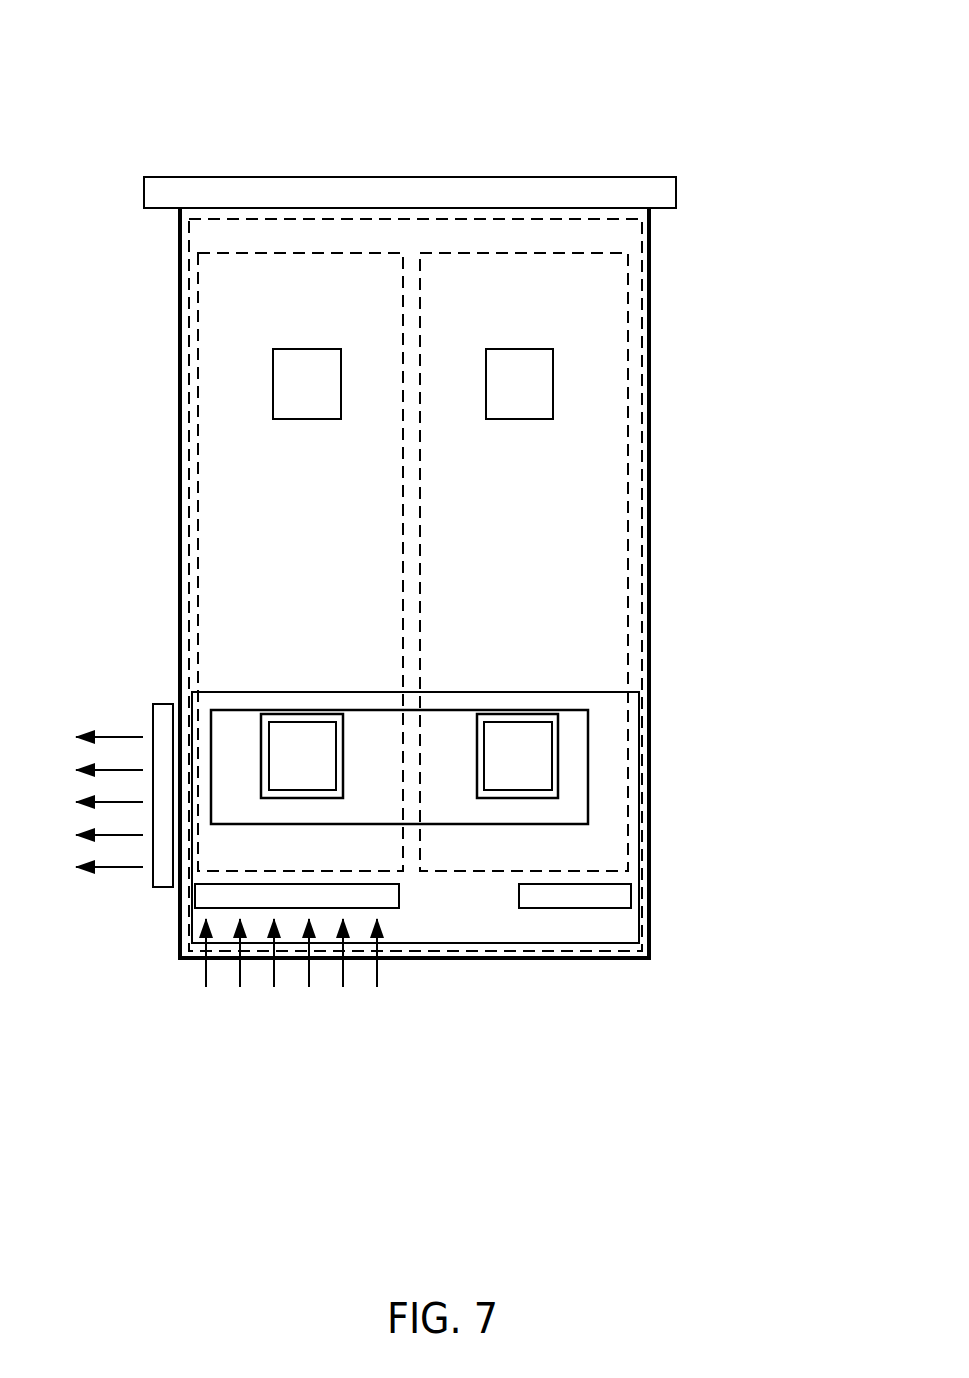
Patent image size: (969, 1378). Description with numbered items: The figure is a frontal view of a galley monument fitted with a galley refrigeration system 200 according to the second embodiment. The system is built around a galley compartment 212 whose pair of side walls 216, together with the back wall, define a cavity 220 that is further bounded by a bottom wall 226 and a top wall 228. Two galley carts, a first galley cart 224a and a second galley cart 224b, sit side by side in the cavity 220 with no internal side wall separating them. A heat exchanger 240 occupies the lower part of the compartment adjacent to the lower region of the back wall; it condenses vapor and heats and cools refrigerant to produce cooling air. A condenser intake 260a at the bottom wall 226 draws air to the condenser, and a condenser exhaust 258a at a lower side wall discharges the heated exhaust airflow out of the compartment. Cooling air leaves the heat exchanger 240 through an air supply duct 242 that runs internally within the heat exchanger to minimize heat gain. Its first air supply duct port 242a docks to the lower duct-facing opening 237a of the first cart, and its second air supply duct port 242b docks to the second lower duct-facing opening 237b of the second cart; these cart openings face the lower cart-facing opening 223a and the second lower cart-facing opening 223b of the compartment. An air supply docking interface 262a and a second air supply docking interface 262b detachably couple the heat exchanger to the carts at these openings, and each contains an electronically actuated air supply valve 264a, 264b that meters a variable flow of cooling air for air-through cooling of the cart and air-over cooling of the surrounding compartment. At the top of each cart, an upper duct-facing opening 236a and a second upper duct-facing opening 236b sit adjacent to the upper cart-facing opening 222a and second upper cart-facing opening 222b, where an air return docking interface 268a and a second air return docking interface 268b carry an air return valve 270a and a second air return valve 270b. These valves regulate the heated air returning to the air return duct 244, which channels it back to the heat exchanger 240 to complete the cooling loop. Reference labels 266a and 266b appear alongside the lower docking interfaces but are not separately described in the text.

The galley refrigeration system 200 is at (523, 68).
The galley compartment 212 is at (642, 235).
The side walls 216 is at (180, 254).
The cavity 220 is at (243, 488).
The upper cart-facing opening 222a is at (243, 389).
The second upper cart-facing opening 222b is at (574, 389).
The lower cart-facing opening 223a is at (280, 678).
The second lower cart-facing opening 223b is at (530, 678).
The galley cart 224a is at (300, 562).
The second galley cart 224b is at (524, 562).
The bottom wall 226 is at (527, 959).
The top wall 228 is at (410, 192).
The upper duct-facing opening 236a is at (332, 349).
The second upper duct-facing opening 236b is at (543, 349).
The lower duct-facing opening 237a is at (289, 720).
The second lower duct-facing opening 237b is at (525, 720).
The heat exchanger 240 is at (408, 756).
The air supply duct 242 is at (310, 710).
The first air supply duct port 242a is at (307, 798).
The second air supply duct port 242b is at (517, 798).
The air return duct 244 is at (575, 895).
The condenser exhaust 258a is at (152, 714).
The condenser intake 260a is at (297, 895).
The air supply docking interface 262a is at (231, 731).
The second air supply docking interface 262b is at (581, 732).
The electronically actuated air supply valve 264a is at (302, 756).
The second electronically actuated air supply valve 264b is at (518, 756).
The first thermal module 266a is at (232, 746).
The second thermal module 266b is at (580, 747).
The air return docking interface 268a is at (232, 562).
The second air return docking interface 268b is at (591, 562).
The air return valve 270a is at (307, 384).
The second air return valve 270b is at (519, 384).